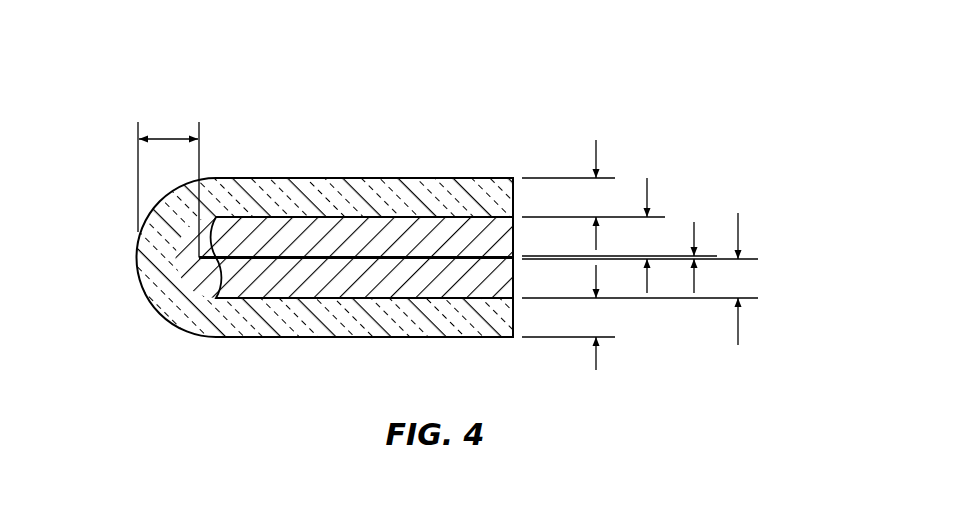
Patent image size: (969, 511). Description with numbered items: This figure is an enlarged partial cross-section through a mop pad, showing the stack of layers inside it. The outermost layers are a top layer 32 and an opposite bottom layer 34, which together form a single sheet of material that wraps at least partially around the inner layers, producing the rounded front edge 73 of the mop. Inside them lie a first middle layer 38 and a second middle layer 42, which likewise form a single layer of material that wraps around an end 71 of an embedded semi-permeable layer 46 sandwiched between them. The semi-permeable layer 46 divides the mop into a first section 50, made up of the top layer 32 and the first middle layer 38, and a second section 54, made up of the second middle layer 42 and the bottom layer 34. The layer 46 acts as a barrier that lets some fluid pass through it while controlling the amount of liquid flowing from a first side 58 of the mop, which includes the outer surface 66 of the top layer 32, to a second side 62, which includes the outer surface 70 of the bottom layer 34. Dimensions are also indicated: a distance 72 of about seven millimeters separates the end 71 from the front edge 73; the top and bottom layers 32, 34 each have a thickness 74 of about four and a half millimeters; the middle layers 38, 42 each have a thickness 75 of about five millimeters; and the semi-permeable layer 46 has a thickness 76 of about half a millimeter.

The top layer 32 is at (307, 178).
The bottom layer 34 is at (233, 317).
The first middle layer 38 is at (380, 233).
The second middle layer 42 is at (344, 272).
The semi-permeable layer 46 is at (459, 262).
The first section 50 is at (260, 233).
The second section 54 is at (227, 277).
The first side 58 is at (363, 176).
The second side 62 is at (280, 338).
The outer surface of the top layer 66 is at (437, 178).
The outer surface of the bottom layer 70 is at (410, 338).
The end of the semi-permeable layer 71 is at (200, 254).
The distance 72 is at (170, 138).
The front edge 73 is at (138, 258).
The thickness of the top and bottom layers 74 is at (596, 255).
The thickness of the middle layers 75 is at (692, 261).
The thickness of the semi-permeable layer 76 is at (694, 245).